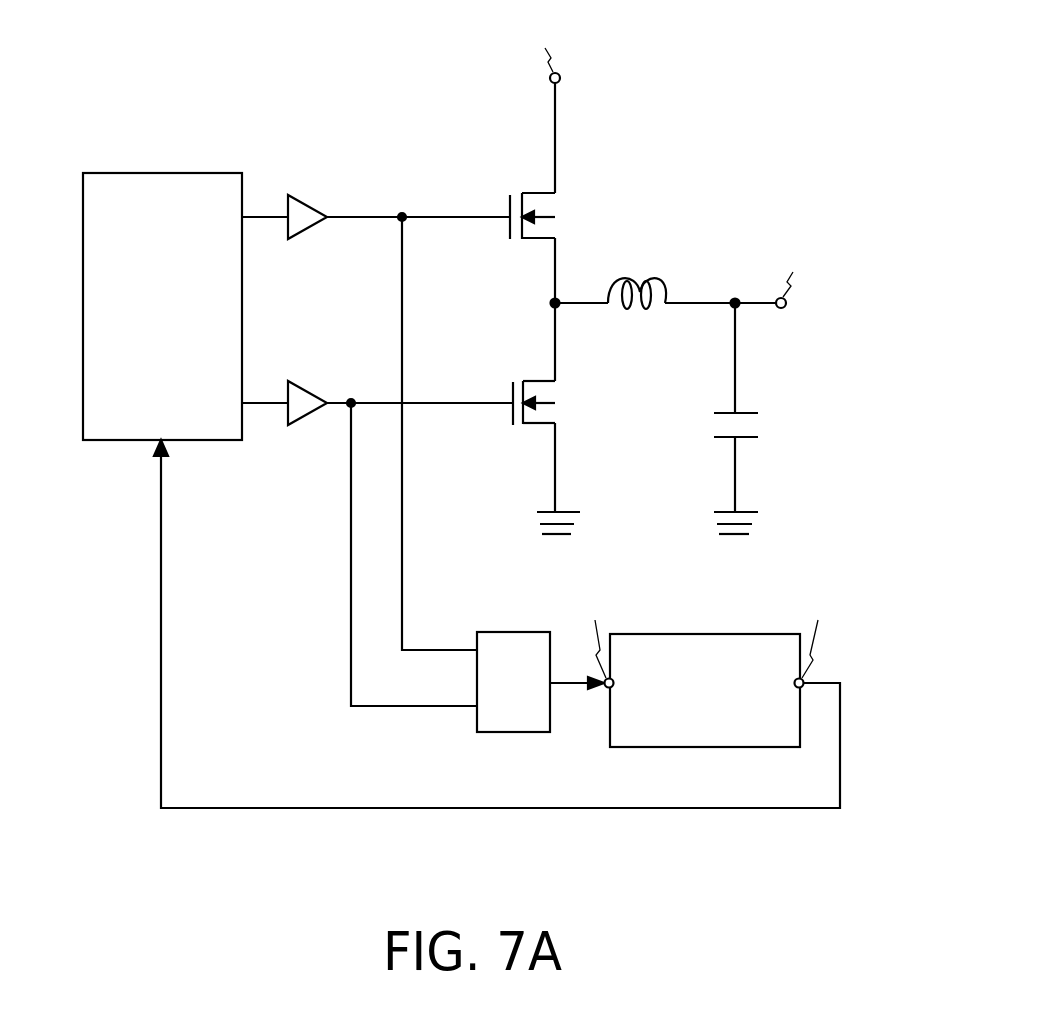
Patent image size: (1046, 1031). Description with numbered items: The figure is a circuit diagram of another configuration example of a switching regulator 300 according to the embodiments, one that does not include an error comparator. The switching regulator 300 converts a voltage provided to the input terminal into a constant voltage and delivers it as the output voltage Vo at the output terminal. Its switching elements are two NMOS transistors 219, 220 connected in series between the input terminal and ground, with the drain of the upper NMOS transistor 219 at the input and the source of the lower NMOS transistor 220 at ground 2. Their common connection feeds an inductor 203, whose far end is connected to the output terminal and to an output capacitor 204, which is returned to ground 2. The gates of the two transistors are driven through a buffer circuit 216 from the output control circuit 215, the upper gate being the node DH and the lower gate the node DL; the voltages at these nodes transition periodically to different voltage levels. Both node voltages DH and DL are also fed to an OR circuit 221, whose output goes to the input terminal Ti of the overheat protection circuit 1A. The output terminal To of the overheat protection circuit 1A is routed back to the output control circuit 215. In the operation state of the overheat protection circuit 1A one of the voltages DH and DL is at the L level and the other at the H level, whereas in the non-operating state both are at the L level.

The switching regulator 300 is at (710, 80).
The output control circuit 215 is at (162, 282).
The buffer circuit 216 is at (295, 341).
The NMOS transistor 219 is at (513, 188).
The NMOS transistor 220 is at (513, 373).
The inductor 203 is at (645, 265).
The output capacitor 204 is at (715, 407).
The ground 2 is at (638, 500).
The OR circuit 221 is at (506, 653).
The overheat protection circuit 1A is at (704, 664).